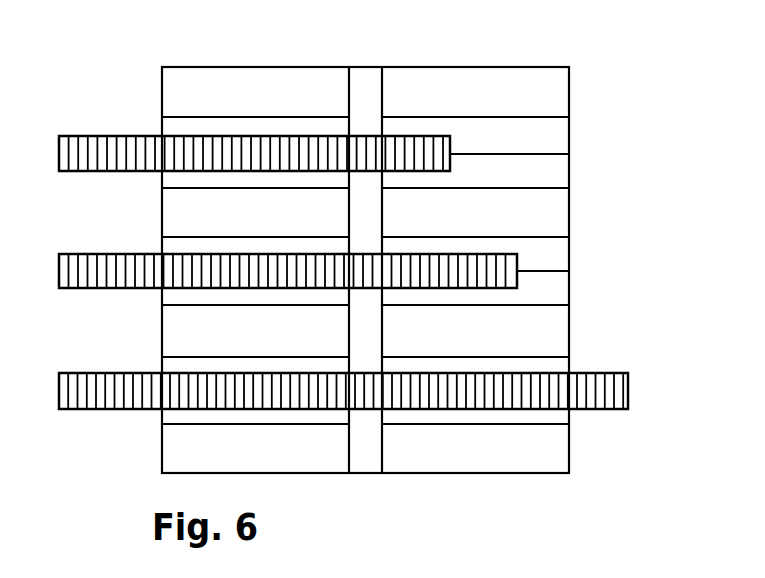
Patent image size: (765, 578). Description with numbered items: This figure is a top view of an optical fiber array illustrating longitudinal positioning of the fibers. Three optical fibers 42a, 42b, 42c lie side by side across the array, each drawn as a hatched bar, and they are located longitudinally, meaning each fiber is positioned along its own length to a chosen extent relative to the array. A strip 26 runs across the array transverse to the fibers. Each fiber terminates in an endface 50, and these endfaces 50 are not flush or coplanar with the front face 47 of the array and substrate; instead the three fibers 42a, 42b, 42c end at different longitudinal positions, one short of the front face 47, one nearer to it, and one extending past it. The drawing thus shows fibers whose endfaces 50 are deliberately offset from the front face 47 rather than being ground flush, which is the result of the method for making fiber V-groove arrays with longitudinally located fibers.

The conductive strip 26 is at (365, 457).
The optical fiber 42a is at (110, 139).
The optical fiber 42b is at (110, 258).
The optical fiber 42c is at (110, 377).
The front face 47 is at (570, 168).
The endface 50 is at (452, 147).